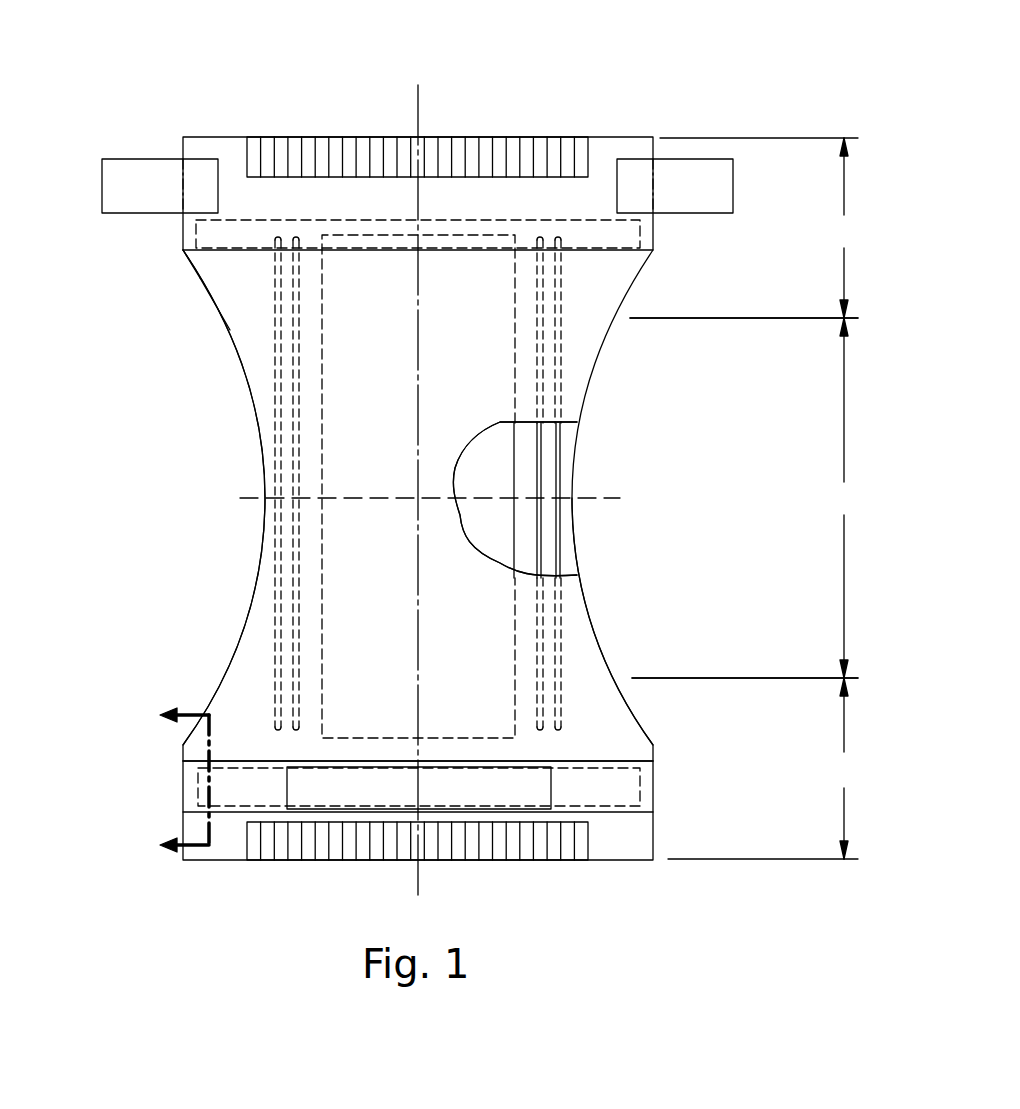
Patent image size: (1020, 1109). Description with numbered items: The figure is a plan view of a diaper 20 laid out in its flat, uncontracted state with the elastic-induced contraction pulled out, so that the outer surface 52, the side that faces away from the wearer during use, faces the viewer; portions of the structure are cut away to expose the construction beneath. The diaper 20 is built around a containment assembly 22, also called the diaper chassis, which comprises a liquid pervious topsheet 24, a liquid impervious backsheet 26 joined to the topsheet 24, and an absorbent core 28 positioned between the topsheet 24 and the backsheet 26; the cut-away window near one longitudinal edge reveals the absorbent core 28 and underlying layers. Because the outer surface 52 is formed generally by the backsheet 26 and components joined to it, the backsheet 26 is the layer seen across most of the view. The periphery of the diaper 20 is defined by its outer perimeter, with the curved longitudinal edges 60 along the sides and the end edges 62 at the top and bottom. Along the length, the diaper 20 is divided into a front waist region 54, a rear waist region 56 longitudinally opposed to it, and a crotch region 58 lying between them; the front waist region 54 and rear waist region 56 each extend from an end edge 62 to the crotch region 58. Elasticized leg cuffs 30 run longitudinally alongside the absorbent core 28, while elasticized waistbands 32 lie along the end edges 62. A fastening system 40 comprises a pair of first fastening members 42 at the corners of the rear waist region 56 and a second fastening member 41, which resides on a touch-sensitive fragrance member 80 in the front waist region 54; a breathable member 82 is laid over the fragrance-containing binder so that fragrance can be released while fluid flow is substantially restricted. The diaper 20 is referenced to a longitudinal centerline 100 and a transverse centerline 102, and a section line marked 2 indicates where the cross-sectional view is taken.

The diaper 20 is at (650, 68).
The containment assembly 22 is at (250, 368).
The liquid pervious topsheet 24 is at (568, 563).
The liquid impervious backsheet 26 is at (223, 277).
The absorbent core 28 is at (503, 479).
The elasticized leg cuffs 30 is at (558, 545).
The elasticized waistbands 32 is at (478, 160).
The fastening system 40 is at (421, 141).
The second fastening member 41 is at (284, 794).
The first fastening members 42 is at (149, 198).
The outer surface 52 is at (242, 315).
The front waist region 54 is at (745, 768).
The rear waist region 56 is at (744, 228).
The crotch region 58 is at (744, 498).
The longitudinal edges 60 is at (597, 633).
The end edges 62 is at (400, 509).
The touch-sensitive fragrance member 80 is at (231, 755).
The breathable member 82 is at (263, 761).
The longitudinal centerline 100 is at (418, 103).
The transverse centerline 102 is at (620, 498).
The section line 2- 2 is at (171, 785).